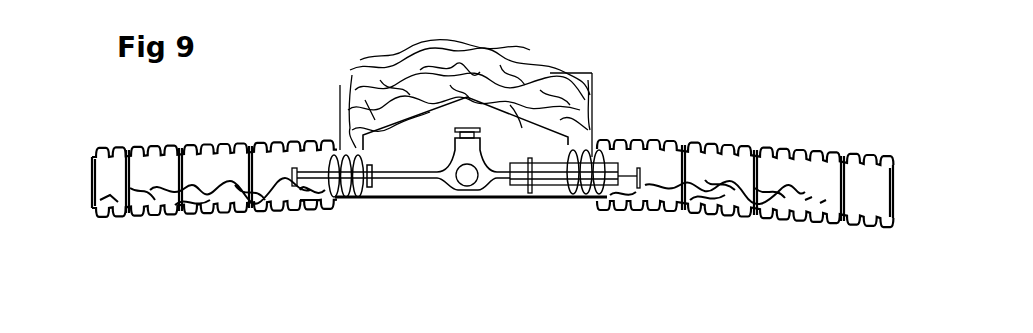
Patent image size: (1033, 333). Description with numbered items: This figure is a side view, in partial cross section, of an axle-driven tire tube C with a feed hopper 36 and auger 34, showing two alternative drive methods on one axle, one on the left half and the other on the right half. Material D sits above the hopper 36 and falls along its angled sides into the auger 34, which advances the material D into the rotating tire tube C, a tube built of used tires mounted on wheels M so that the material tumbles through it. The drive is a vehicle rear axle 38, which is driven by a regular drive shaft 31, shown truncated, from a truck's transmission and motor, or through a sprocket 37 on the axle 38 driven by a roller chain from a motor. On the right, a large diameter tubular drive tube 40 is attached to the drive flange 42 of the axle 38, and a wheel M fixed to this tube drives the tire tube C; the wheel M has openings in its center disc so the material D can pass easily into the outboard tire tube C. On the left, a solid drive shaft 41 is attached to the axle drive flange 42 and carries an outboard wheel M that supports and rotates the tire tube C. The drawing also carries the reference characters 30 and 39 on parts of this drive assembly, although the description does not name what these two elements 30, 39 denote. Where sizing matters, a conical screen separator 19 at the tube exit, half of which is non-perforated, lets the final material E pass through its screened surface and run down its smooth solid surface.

The conical screen separator 19 is at (160, 200).
The connecting assembly 30 is at (535, 163).
The drive shaft 31 is at (472, 186).
The auger 34 is at (592, 207).
The hopper 36 is at (515, 113).
The sprocket 37 is at (482, 132).
The vehicle rear axle 38 is at (424, 178).
The plate 39 is at (530, 188).
The tubular drive tube 40 is at (537, 186).
The solid drive shaft 41 is at (320, 206).
The drive flange 42 is at (371, 195).
The tire tube C is at (130, 135).
The material D is at (338, 58).
The final material E is at (90, 200).
The wheel M is at (287, 218).